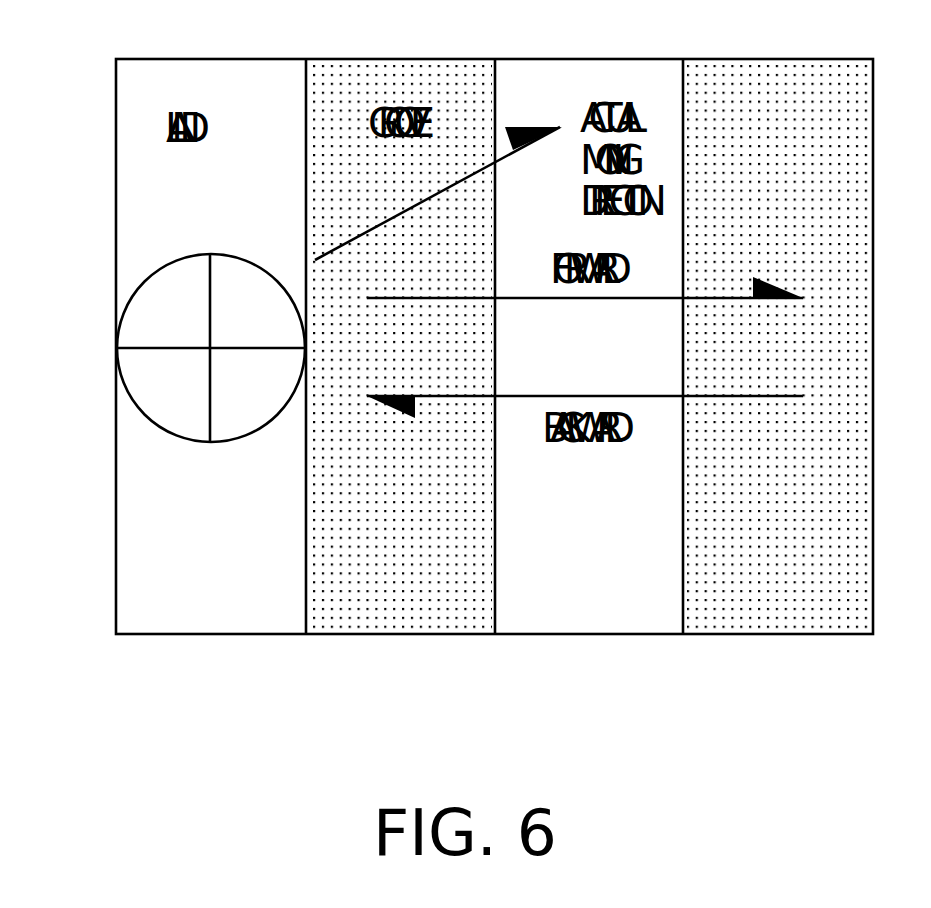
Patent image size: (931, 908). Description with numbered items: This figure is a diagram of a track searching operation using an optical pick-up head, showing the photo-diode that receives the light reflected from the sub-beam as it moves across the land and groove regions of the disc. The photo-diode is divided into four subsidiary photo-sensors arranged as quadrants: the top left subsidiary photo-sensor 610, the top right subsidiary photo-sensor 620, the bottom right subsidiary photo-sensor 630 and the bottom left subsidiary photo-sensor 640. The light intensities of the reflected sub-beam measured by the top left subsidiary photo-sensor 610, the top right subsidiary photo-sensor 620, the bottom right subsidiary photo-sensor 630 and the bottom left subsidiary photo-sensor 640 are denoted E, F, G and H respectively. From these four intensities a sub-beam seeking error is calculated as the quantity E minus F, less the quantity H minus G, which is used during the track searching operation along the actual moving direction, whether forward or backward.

The top left subsidiary photo-sensor 610 is at (157, 325).
The top right subsidiary photo-sensor 620 is at (257, 302).
The bottom right subsidiary photo-sensor 630 is at (257, 405).
The bottom left subsidiary photo-sensor 640 is at (157, 403).